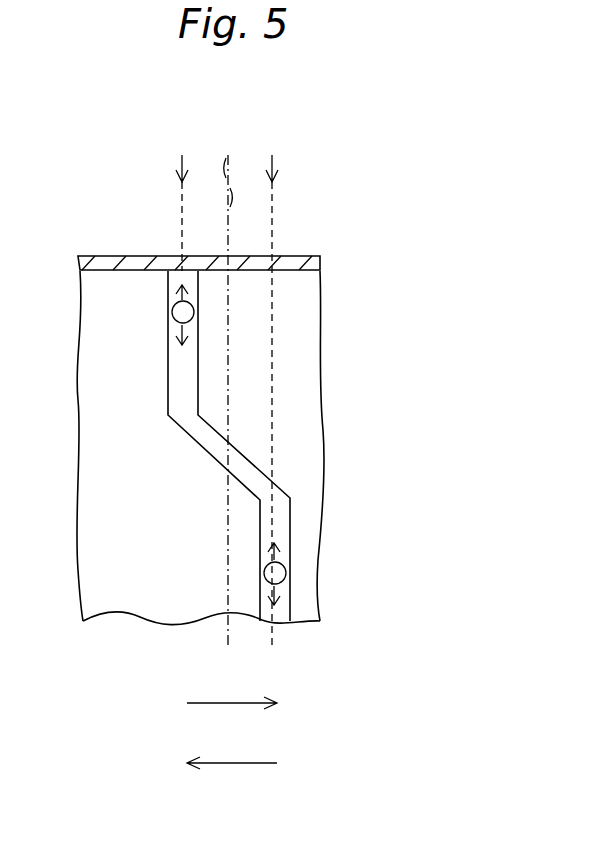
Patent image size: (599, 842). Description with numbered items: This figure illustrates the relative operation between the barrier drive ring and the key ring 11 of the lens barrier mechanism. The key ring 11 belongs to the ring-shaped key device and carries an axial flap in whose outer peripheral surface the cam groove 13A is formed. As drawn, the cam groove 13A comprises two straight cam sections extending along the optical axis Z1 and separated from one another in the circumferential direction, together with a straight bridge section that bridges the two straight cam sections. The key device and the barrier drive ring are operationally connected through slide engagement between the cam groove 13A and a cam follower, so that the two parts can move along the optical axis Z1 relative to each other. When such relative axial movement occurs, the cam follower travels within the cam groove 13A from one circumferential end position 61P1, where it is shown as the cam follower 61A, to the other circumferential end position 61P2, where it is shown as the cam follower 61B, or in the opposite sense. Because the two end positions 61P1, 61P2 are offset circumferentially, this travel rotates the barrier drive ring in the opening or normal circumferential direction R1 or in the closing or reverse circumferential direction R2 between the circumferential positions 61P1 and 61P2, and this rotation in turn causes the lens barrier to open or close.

The key ring 11 is at (312, 262).
The cam groove 13A is at (283, 524).
The cam follower at first circumferential end position 61A is at (170, 312).
The cam follower at second circumferential end position 61B is at (288, 571).
The first circumferential end position 61P1 is at (180, 200).
The second circumferential end position 61P2 is at (273, 387).
The optical axis Z1 is at (226, 387).
The opening or normal circumferential direction R1 is at (232, 692).
The closing or reverse circumferential direction R2 is at (232, 752).